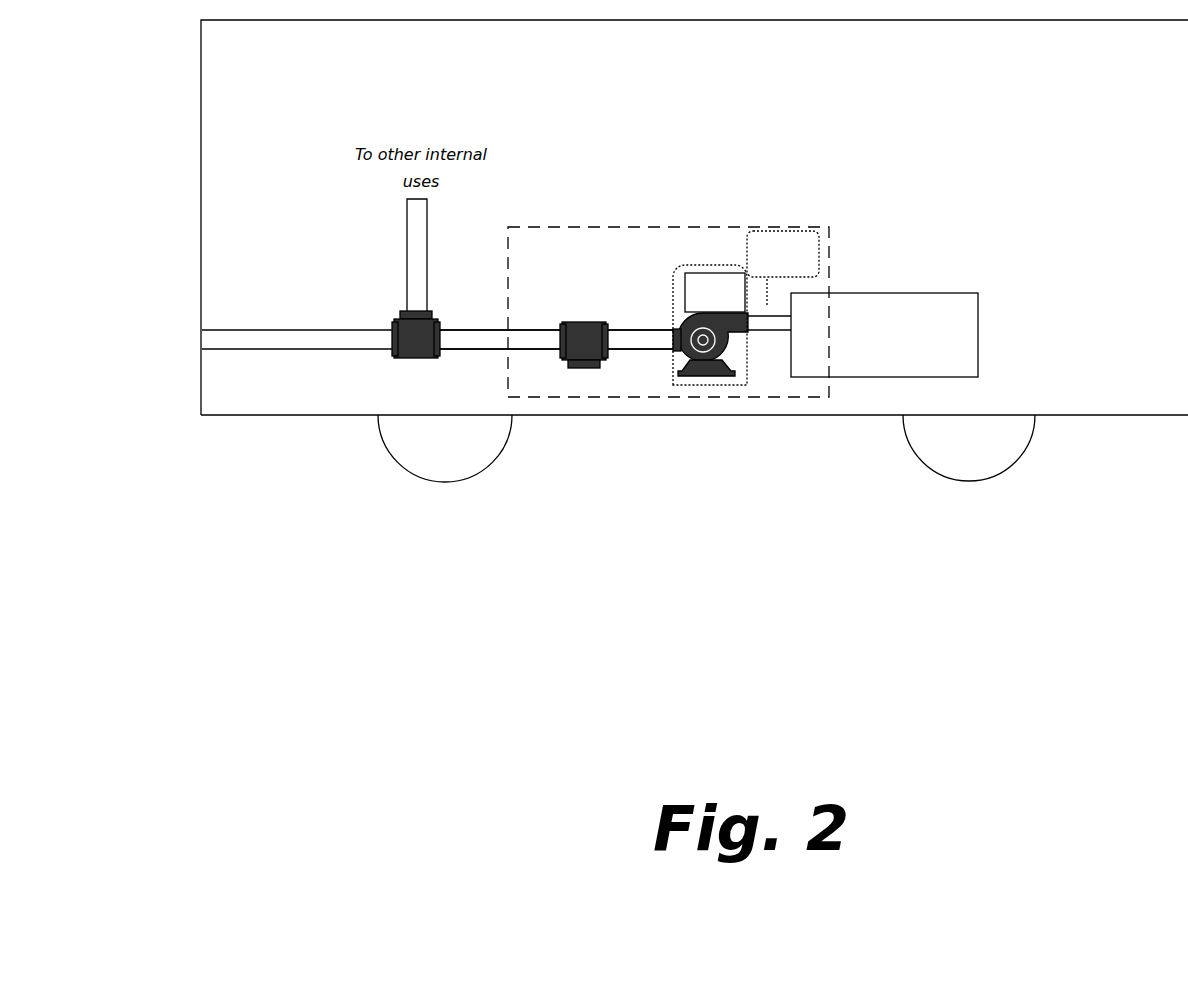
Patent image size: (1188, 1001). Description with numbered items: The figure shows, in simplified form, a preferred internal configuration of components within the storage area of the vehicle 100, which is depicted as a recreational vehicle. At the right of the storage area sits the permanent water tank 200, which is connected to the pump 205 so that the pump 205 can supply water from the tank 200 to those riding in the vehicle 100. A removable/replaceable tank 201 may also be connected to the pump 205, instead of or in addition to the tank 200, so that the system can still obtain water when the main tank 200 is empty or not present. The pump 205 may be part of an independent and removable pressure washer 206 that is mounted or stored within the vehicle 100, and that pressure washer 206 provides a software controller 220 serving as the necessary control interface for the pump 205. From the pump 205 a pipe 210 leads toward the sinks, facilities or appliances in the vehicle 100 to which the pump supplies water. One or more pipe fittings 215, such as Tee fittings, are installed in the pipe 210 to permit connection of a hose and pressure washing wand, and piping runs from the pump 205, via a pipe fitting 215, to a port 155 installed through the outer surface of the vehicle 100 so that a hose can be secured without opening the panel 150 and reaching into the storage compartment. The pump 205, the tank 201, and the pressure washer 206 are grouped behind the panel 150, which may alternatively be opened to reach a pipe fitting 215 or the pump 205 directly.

The vehicle 100 is at (694, 251).
The port 155 is at (200, 348).
The pipe fitting 215 is at (400, 312).
The pipe 210 is at (428, 263).
The panel 150 is at (697, 397).
The pump 205 is at (687, 320).
The pressure washer 206 is at (720, 265).
The software controller 220 is at (715, 292).
The removable/replaceable tank 201 is at (783, 268).
The water tank 200 is at (884, 335).